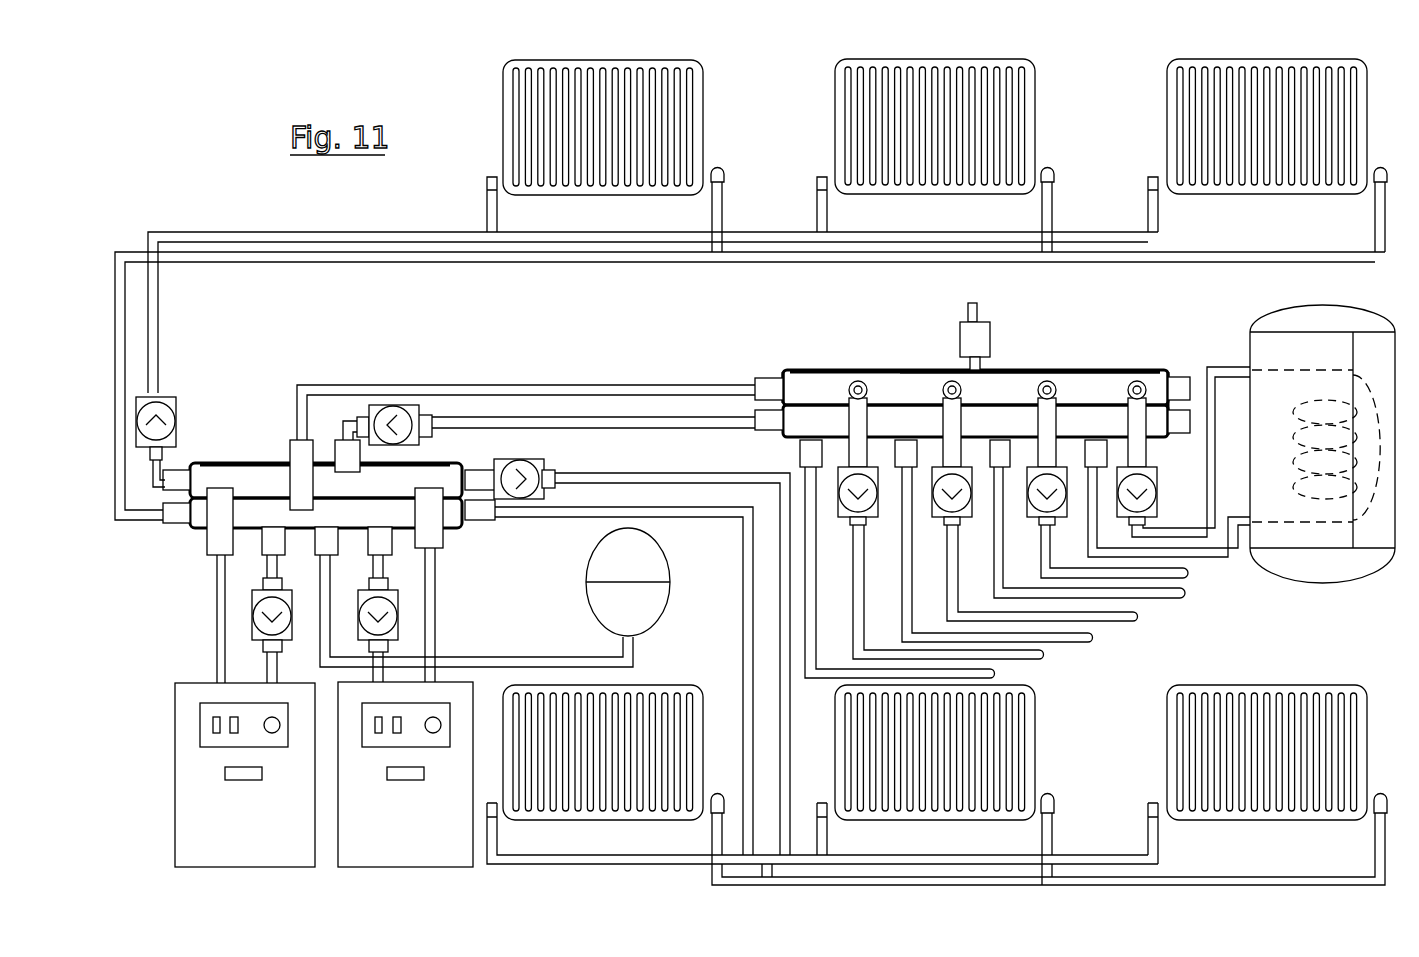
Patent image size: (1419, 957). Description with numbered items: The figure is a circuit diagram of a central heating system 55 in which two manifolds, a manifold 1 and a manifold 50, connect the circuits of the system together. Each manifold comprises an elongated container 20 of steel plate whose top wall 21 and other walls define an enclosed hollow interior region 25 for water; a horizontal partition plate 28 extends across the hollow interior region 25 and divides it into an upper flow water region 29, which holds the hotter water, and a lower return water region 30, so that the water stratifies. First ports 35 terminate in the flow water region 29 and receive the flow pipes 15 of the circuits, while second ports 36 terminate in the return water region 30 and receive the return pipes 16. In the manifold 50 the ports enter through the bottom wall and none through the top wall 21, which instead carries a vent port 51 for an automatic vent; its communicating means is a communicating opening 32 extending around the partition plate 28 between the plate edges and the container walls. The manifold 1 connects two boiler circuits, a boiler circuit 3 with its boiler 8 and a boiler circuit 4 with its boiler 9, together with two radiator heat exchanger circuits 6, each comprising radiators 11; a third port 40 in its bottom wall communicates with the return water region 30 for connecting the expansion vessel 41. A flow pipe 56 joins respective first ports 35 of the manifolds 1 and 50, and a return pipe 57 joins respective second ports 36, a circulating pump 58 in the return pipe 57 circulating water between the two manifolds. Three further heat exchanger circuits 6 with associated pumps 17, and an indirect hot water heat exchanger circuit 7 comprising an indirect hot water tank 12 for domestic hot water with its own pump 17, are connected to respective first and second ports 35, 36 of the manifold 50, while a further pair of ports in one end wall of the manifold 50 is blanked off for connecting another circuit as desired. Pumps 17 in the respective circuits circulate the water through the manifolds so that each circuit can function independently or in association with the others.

The manifold 1 is at (660, 459).
The boiler circuit 3 is at (182, 633).
The boiler circuit 4 is at (488, 637).
The radiator heat exchanger circuit 6 is at (523, 275).
The indirect hot water heat exchanger circuit 7 is at (1240, 326).
The boiler 8 is at (285, 862).
The boiler 9 is at (440, 862).
The radiator 11 is at (503, 125).
The indirect hot water tank 12 is at (1340, 304).
The flow pipe 15 is at (160, 355).
The return pipe 16 is at (125, 318).
The pump 17 is at (180, 418).
The elongated container 20 is at (1045, 375).
The top wall 21 is at (812, 375).
The hollow interior region 25 is at (243, 470).
The partition plate 28 is at (1077, 405).
The flow water region 29 is at (266, 470).
The return water region 30 is at (210, 523).
The communicating opening 32 is at (1132, 407).
The first port 35 is at (163, 482).
The second port 36 is at (300, 465).
The third port 40 is at (327, 528).
The expansion vessel 41 is at (650, 603).
The manifold 50 is at (975, 354).
The vent port 51 is at (987, 368).
The central heating system 55 is at (212, 153).
The flow pipe 56 is at (440, 385).
The return pipe 57 is at (543, 415).
The circulating pump 58 is at (393, 412).